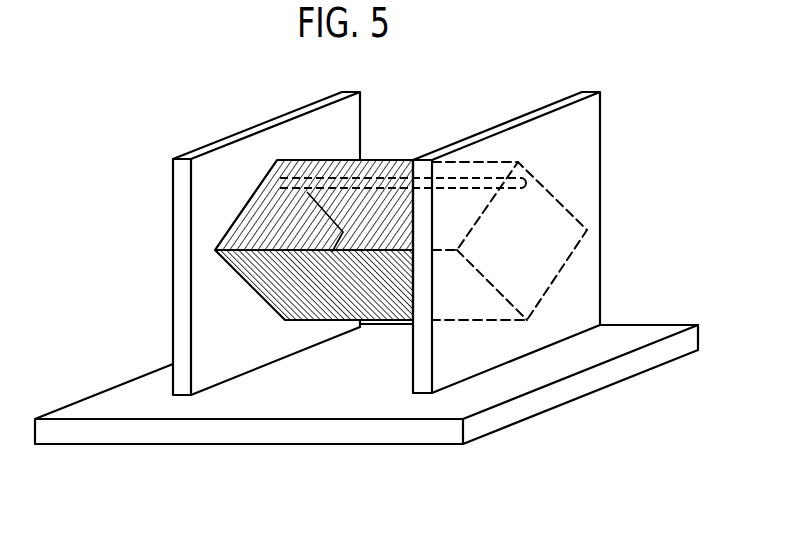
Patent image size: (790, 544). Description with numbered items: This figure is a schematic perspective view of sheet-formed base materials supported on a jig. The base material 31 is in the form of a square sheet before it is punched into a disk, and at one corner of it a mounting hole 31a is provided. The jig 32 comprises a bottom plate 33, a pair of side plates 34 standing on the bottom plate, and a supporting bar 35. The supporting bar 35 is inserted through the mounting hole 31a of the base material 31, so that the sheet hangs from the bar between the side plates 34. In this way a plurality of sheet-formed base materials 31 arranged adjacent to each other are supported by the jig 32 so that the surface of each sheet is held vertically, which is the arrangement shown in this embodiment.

The base material 31 is at (395, 158).
The mounting hole 31a is at (523, 188).
The jig 32 is at (627, 381).
The bottom plate 33 is at (366, 409).
The side plates 34 is at (195, 277).
The supporting bar 35 is at (341, 162).